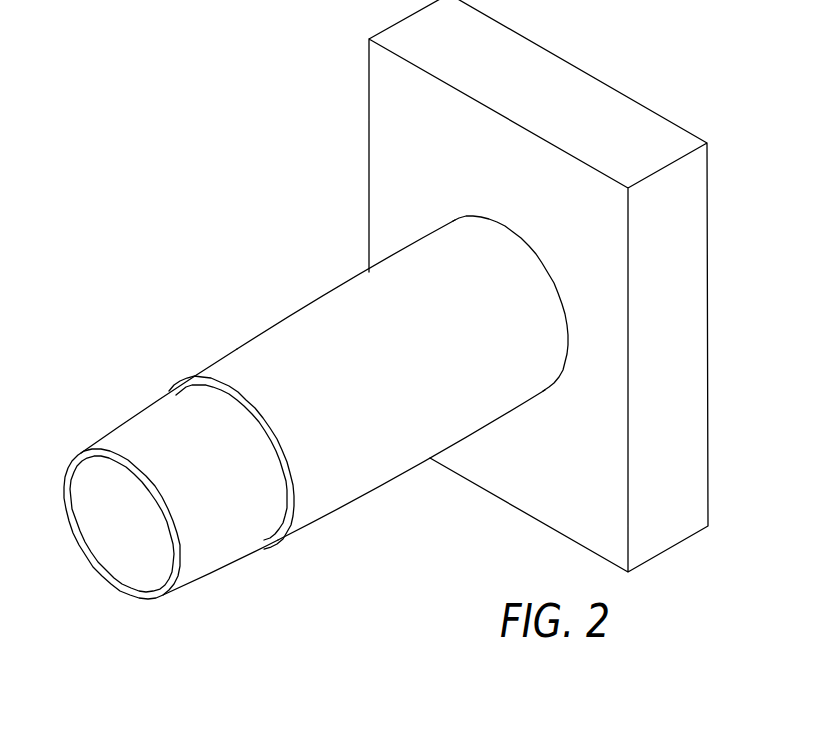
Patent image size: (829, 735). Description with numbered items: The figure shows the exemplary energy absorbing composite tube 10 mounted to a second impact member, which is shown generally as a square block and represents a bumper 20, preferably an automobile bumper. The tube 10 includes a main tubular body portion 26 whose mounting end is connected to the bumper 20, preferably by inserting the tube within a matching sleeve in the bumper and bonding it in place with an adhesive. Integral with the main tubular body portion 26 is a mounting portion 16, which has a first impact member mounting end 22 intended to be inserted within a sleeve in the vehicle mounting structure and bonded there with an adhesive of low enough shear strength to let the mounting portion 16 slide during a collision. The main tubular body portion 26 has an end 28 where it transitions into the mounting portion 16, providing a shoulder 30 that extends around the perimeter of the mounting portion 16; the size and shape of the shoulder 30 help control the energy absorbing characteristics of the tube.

The composite tube 10 is at (396, 320).
The mounting portion 16 is at (243, 475).
The bumper 20 is at (620, 127).
The first impact member mounting end 22 is at (127, 447).
The main tubular body portion 26 is at (318, 342).
The end of main tubular body portion 28 is at (228, 393).
The shoulder 30 is at (258, 548).